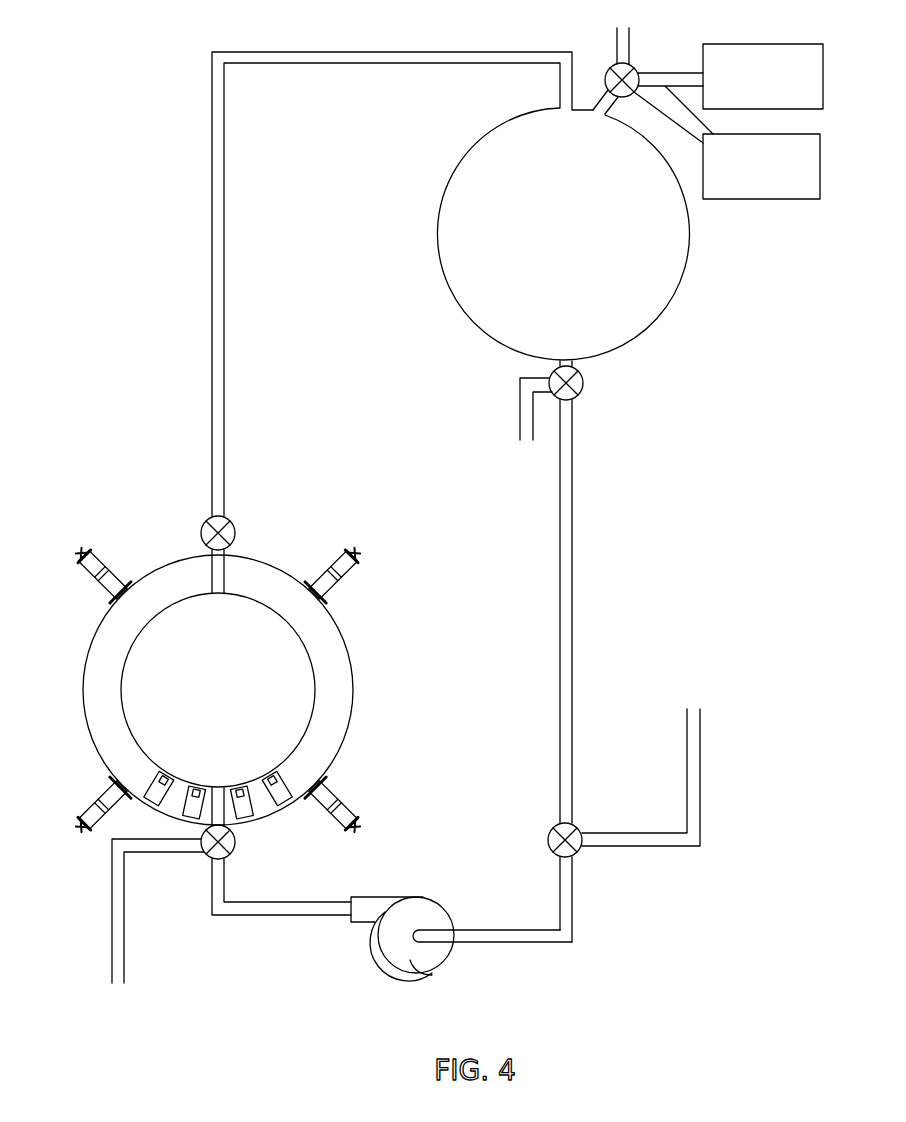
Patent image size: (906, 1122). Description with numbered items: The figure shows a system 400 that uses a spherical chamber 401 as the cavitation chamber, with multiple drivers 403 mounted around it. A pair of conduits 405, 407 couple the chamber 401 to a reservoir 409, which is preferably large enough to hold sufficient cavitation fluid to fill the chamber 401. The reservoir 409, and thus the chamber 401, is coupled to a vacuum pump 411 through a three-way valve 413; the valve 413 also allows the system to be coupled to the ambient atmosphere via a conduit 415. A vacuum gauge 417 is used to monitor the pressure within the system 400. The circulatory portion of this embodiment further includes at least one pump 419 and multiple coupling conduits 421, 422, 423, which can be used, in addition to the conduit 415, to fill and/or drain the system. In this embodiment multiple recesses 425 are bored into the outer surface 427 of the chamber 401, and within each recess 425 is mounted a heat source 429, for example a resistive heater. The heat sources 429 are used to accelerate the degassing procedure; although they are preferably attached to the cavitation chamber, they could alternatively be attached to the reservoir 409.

The system 400 is at (165, 266).
The spherical chamber 401 is at (201, 687).
The drivers 403 is at (128, 557).
The conduit 405 is at (225, 200).
The conduit 407 is at (210, 883).
The reservoir 409 is at (686, 293).
The vacuum pump 411 is at (749, 44).
The three-way valve 413 is at (640, 72).
The conduit 415 is at (615, 40).
The vacuum gauge 417 is at (745, 200).
The pump 419 is at (432, 973).
The coupling conduit 421 is at (520, 424).
The coupling conduit 422 is at (687, 787).
The coupling conduit 423 is at (112, 905).
The recesses 425 is at (250, 810).
The outer surface 427 is at (355, 672).
The heat source 429 is at (269, 780).